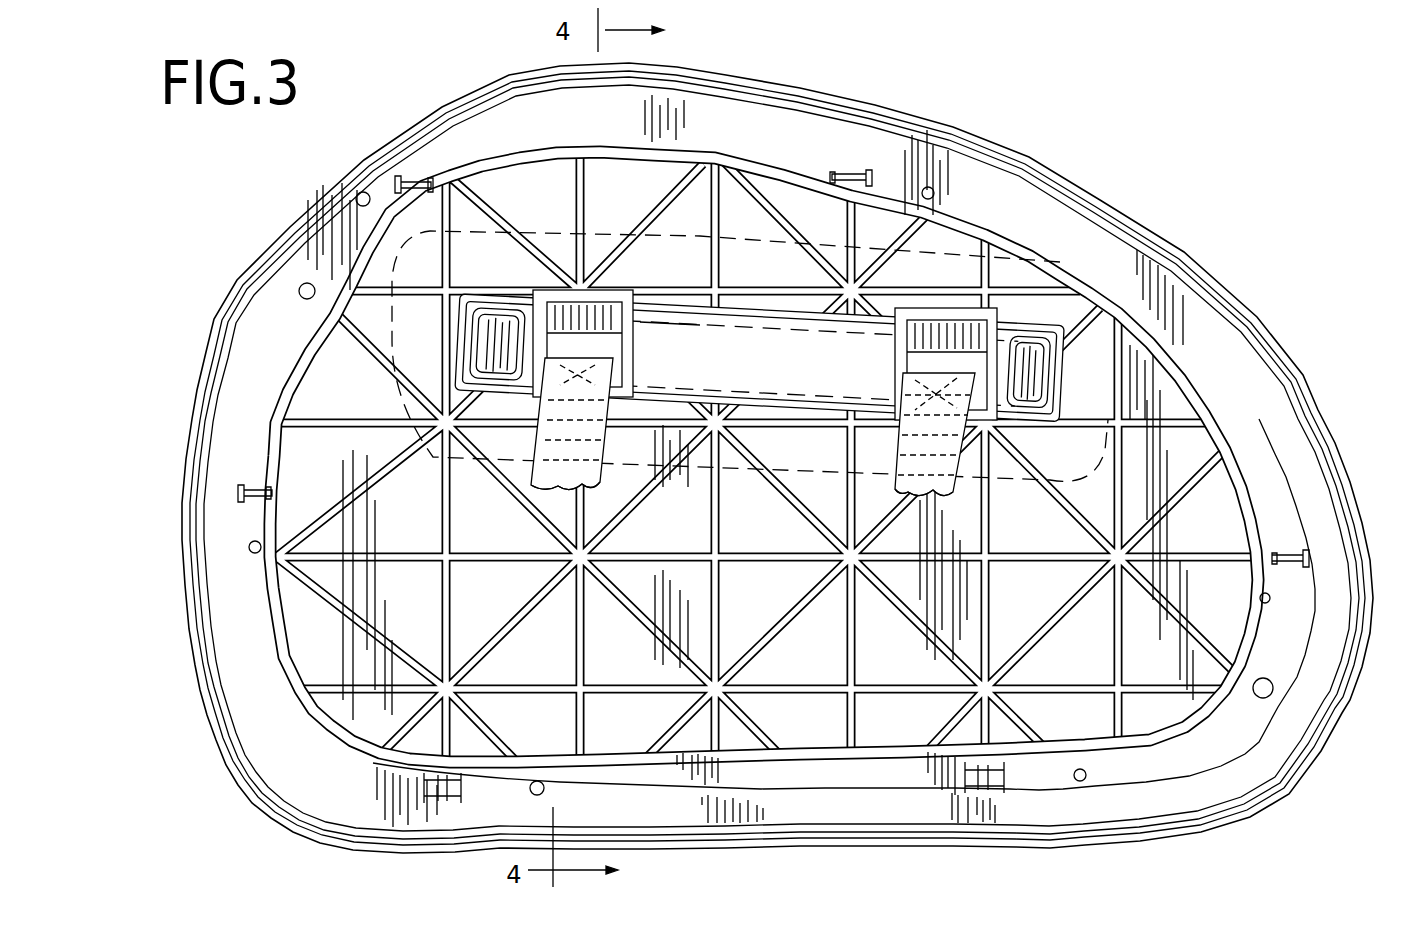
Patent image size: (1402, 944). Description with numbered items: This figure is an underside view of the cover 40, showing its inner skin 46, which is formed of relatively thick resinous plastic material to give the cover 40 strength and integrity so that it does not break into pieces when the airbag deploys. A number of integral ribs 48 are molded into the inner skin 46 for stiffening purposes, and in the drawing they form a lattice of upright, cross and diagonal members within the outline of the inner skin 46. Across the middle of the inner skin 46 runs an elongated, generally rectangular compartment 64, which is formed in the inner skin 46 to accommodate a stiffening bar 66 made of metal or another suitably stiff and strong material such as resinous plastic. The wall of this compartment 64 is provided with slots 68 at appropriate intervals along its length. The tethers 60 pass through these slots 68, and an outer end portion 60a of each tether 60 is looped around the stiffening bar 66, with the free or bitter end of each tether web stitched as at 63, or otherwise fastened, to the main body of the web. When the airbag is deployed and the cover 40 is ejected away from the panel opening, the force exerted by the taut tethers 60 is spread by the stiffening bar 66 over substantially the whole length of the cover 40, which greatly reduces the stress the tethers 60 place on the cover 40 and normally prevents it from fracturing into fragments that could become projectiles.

The cover 40 is at (840, 875).
The inner skin 46 is at (792, 670).
The integral ribs 48 is at (657, 202).
The tethers 60 is at (608, 492).
The outer end portion of the tethers 60a is at (607, 452).
The stitching 63 is at (520, 368).
The compartment 64 is at (850, 340).
The stiffening bar 66 is at (660, 330).
The slots 68 is at (620, 350).